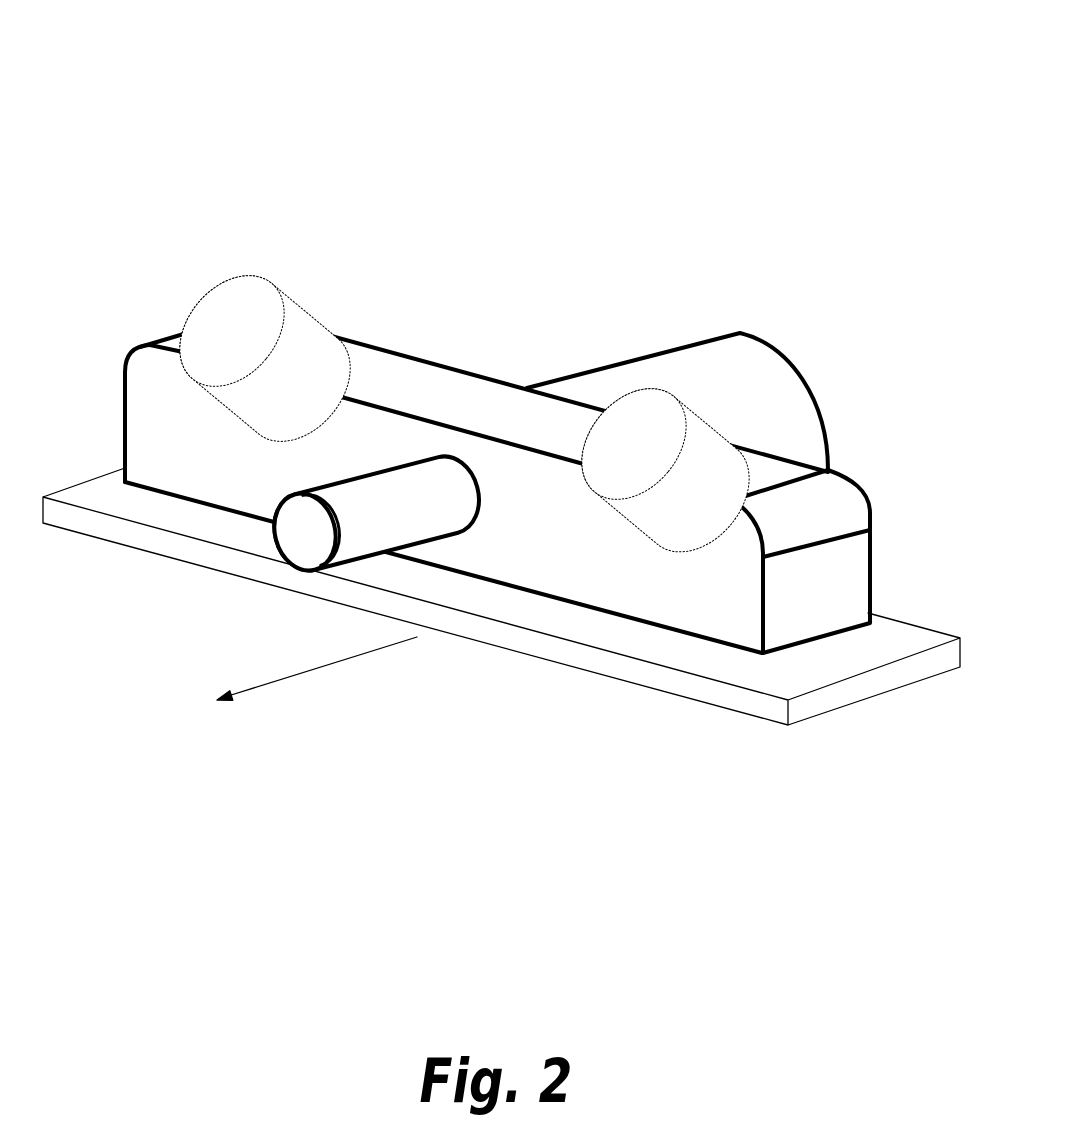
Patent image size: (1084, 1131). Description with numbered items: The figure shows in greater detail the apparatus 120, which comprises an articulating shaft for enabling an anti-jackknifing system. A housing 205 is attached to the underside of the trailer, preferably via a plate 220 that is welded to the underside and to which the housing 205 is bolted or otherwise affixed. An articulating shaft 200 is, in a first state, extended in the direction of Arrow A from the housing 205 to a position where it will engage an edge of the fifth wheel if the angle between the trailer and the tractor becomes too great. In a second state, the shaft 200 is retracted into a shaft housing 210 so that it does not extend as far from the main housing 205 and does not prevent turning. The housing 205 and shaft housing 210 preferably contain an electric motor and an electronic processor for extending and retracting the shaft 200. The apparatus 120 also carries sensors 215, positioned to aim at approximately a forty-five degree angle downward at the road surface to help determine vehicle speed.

The apparatus 120 is at (122, 134).
The articulating shaft 200 is at (375, 505).
The housing 205 is at (517, 410).
The shaft housing 210 is at (712, 377).
The sensors 215 is at (325, 323).
The plate 220 is at (730, 712).